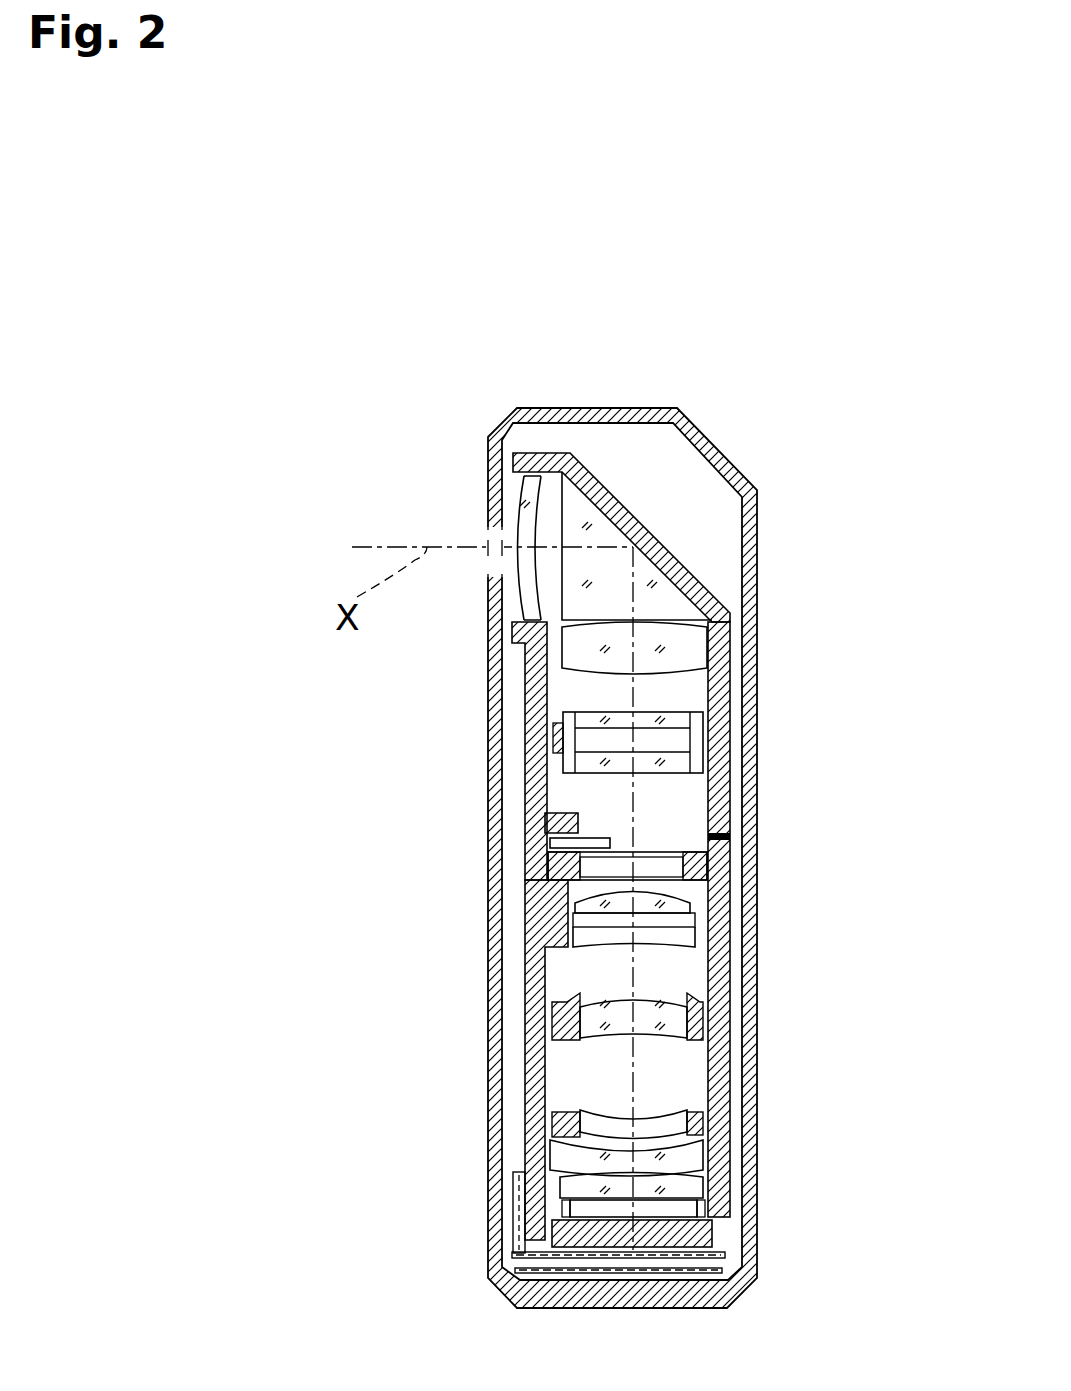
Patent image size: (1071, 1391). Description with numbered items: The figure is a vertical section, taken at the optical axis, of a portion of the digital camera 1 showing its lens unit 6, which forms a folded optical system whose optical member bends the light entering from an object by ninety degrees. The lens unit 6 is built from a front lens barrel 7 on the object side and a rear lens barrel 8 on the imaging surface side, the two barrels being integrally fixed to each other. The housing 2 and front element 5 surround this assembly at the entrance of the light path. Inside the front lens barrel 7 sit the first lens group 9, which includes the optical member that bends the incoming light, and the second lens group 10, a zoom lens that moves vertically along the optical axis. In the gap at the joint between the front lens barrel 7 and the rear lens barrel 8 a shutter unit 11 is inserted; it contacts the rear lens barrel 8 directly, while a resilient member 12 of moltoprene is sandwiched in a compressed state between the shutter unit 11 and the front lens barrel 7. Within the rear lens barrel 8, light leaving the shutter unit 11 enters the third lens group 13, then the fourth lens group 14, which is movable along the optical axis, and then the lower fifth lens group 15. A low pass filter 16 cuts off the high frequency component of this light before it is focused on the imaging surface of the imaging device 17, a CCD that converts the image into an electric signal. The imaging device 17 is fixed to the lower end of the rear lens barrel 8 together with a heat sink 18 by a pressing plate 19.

The digital camera 1 is at (552, 338).
The lens unit housing 2 is at (637, 397).
The first lens 5 is at (487, 497).
The lens unit 6 is at (657, 504).
The front lens barrel 7 is at (516, 750).
The rear lens barrel 8 is at (516, 1022).
The first lens group 9 is at (705, 556).
The second lens group 10 is at (703, 743).
The shutter unit 11 is at (695, 862).
The resilient member 12 is at (600, 833).
The third lens group 13 is at (690, 905).
The fourth lens group 14 is at (695, 1003).
The fifth lens group 15 is at (700, 1130).
The low pass filter 16 is at (695, 1183).
The imaging device 17 is at (705, 1232).
The heat sink 18 is at (517, 1238).
The pressing plate 19 is at (590, 1262).